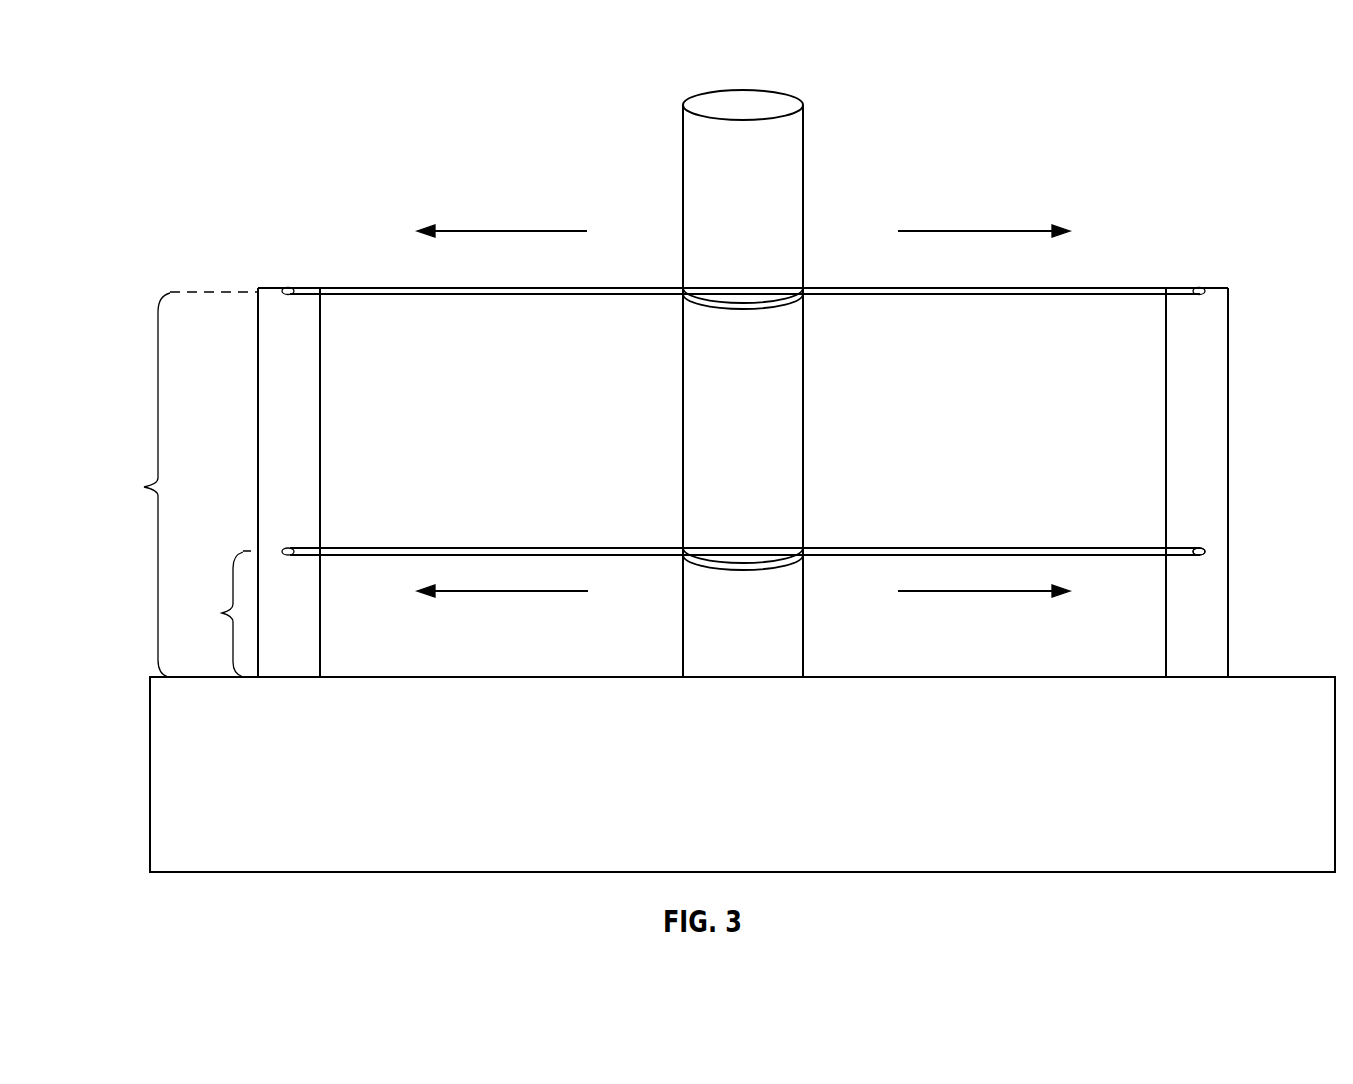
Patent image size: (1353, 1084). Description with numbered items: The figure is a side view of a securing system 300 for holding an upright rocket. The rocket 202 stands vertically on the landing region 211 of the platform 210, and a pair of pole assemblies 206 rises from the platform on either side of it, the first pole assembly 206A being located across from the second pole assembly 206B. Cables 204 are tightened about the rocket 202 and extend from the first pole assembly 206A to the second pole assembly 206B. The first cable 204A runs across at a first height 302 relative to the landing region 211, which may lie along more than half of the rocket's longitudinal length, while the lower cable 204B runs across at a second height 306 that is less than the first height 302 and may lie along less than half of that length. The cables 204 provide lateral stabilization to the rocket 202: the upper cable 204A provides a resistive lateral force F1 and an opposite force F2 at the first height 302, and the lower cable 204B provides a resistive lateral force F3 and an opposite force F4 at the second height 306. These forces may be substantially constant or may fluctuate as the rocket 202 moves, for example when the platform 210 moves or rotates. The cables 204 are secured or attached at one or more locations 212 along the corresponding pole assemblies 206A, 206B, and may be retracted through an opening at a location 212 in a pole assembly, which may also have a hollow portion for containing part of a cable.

The securing system 300 is at (140, 104).
The rocket 202 is at (778, 93).
The cables 204 is at (1152, 280).
The first cable 204A is at (870, 288).
The lower cable 204B is at (977, 548).
The pole assemblies 206 is at (1246, 336).
The first pole assembly 206A is at (1212, 460).
The second pole assembly 206B is at (272, 443).
The platform 210 is at (435, 673).
The landing region 211 is at (922, 677).
The locations 212 is at (1205, 548).
The first height 302 is at (176, 484).
The second height 306 is at (214, 614).
The resistive lateral force F1 is at (985, 232).
The opposite force F2 is at (500, 232).
The resistive lateral force F3 is at (983, 592).
The opposite force F4 is at (500, 592).